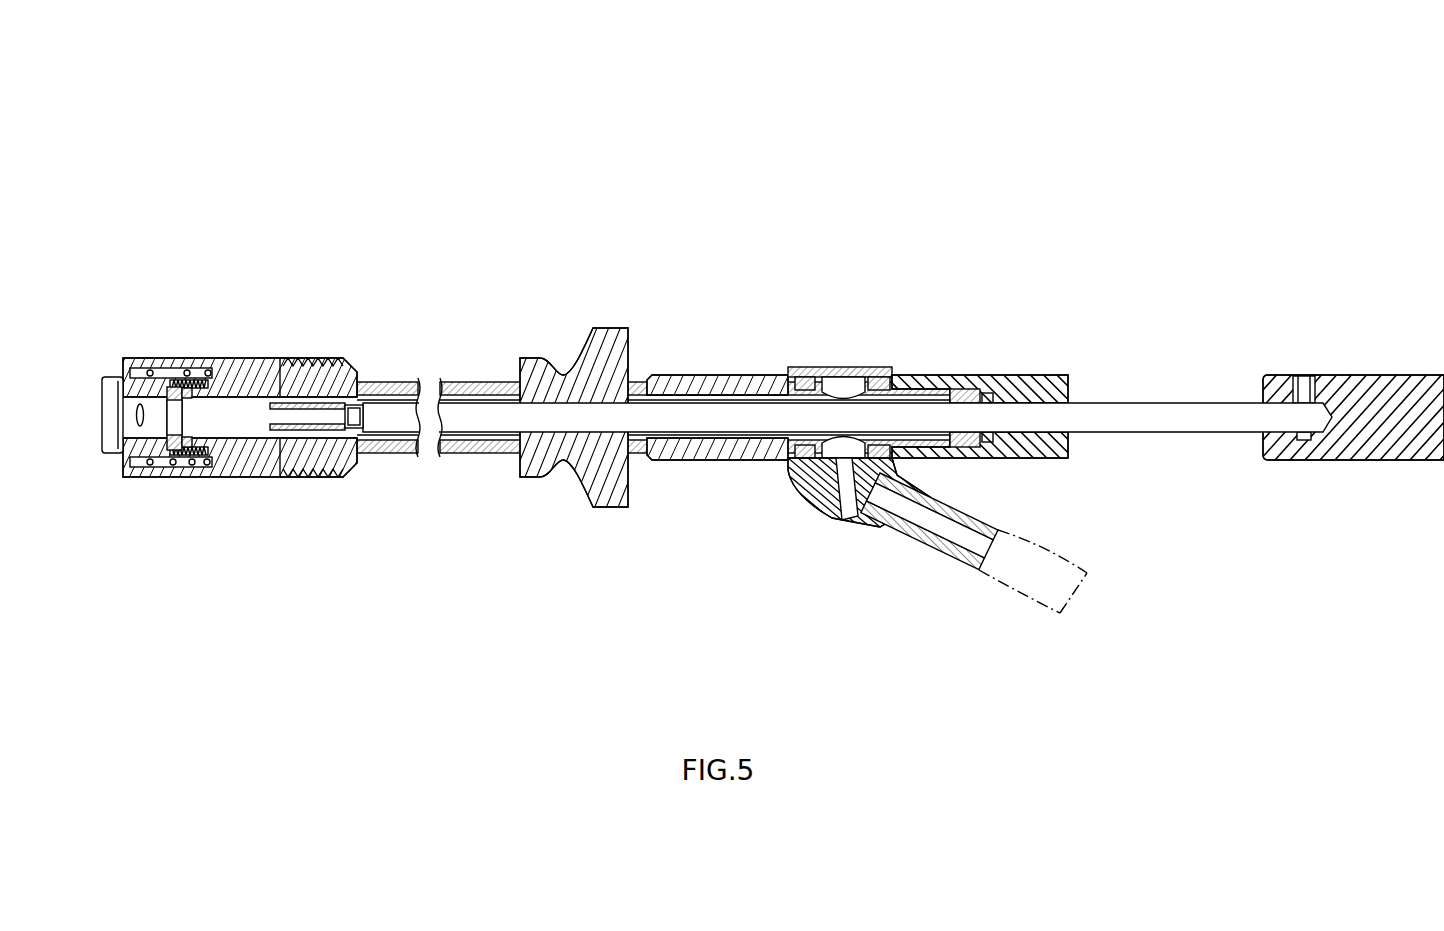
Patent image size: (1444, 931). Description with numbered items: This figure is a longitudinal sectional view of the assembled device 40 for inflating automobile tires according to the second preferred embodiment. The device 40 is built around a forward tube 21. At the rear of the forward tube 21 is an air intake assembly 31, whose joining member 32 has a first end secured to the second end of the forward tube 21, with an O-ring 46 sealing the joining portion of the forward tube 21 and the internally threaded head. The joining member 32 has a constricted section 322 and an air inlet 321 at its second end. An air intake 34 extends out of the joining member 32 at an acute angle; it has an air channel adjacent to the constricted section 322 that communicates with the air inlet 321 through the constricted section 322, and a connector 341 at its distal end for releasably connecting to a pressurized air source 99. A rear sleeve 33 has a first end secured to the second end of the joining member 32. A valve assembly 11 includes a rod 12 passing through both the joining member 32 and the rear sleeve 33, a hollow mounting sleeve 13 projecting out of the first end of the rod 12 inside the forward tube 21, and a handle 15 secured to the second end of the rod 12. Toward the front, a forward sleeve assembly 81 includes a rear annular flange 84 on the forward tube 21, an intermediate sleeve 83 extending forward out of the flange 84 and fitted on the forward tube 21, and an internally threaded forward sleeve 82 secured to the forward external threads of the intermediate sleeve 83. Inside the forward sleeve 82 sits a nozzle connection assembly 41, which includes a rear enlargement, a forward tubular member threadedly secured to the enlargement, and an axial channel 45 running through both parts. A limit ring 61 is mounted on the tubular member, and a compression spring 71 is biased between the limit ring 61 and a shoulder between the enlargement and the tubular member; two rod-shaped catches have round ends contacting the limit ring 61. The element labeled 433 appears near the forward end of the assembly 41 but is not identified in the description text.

The valve assembly 11 is at (1193, 298).
The rod 12 is at (1212, 420).
The hollow mounting sleeve 13 is at (300, 434).
The handle 15 is at (1402, 390).
The forward tube 21 is at (484, 388).
The air intake assembly 31 is at (860, 300).
The joining member 32 is at (717, 385).
The air inlet 321 is at (870, 390).
The constricted section 322 is at (843, 390).
The rear sleeve 33 is at (1028, 385).
The air intake 34 is at (789, 492).
The connector 341 is at (893, 548).
The device for inflating automobile tires 40 is at (1296, 114).
The nozzle connection assembly 41 is at (233, 375).
The window 433 is at (136, 413).
The axial channel 45 is at (166, 386).
The O-ring 46 is at (182, 390).
The limit ring 61 is at (150, 465).
The compression spring 71 is at (188, 465).
The forward sleeve assembly 81 is at (373, 214).
The internally threaded forward sleeve 82 is at (268, 365).
The intermediate sleeve 83 is at (400, 390).
The rear annular flange 84 is at (607, 500).
The pressurized air source 99 is at (1058, 582).